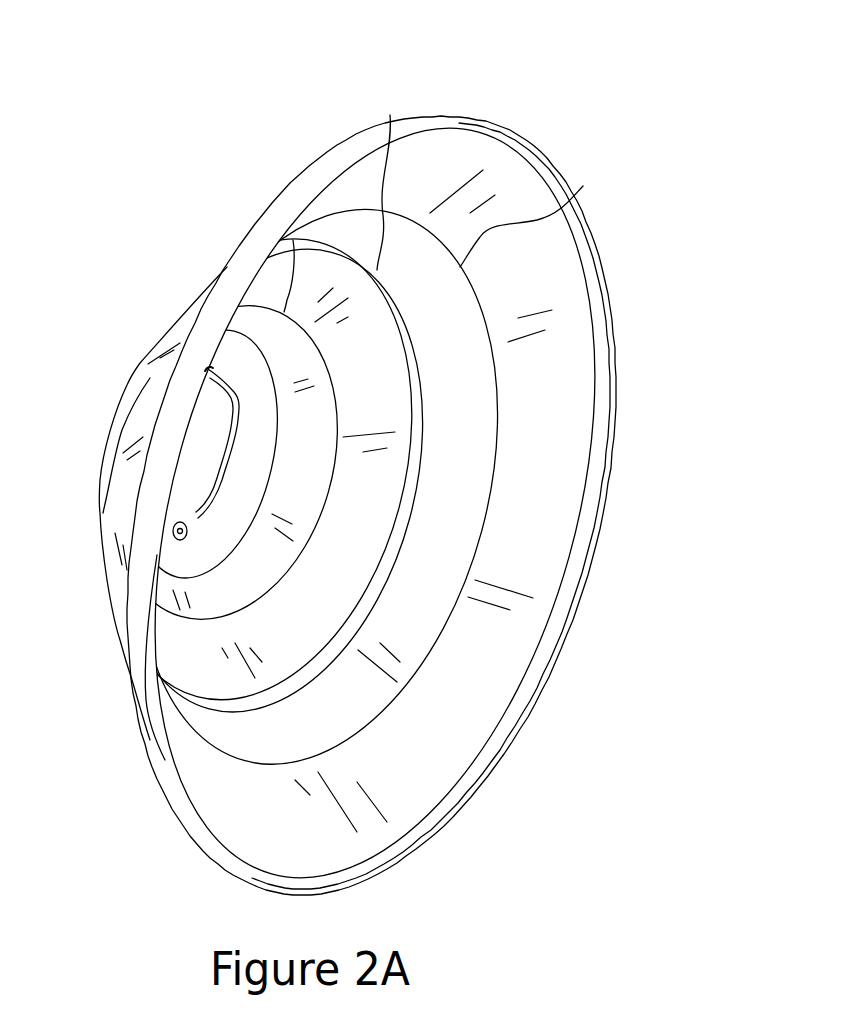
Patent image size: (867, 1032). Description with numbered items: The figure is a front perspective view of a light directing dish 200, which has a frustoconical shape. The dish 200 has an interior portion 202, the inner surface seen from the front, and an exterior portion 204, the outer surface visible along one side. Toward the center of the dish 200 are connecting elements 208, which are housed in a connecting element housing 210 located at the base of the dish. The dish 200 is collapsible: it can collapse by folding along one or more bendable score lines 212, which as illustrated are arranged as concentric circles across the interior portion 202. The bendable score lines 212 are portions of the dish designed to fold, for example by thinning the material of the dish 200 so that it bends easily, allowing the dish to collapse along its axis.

The light directing dish 200 is at (140, 92).
The interior portion 202 is at (560, 446).
The exterior portion 204 is at (120, 342).
The connecting elements 208 is at (185, 531).
The connecting element housing 210 is at (187, 518).
The bendable score lines 212 is at (293, 240).